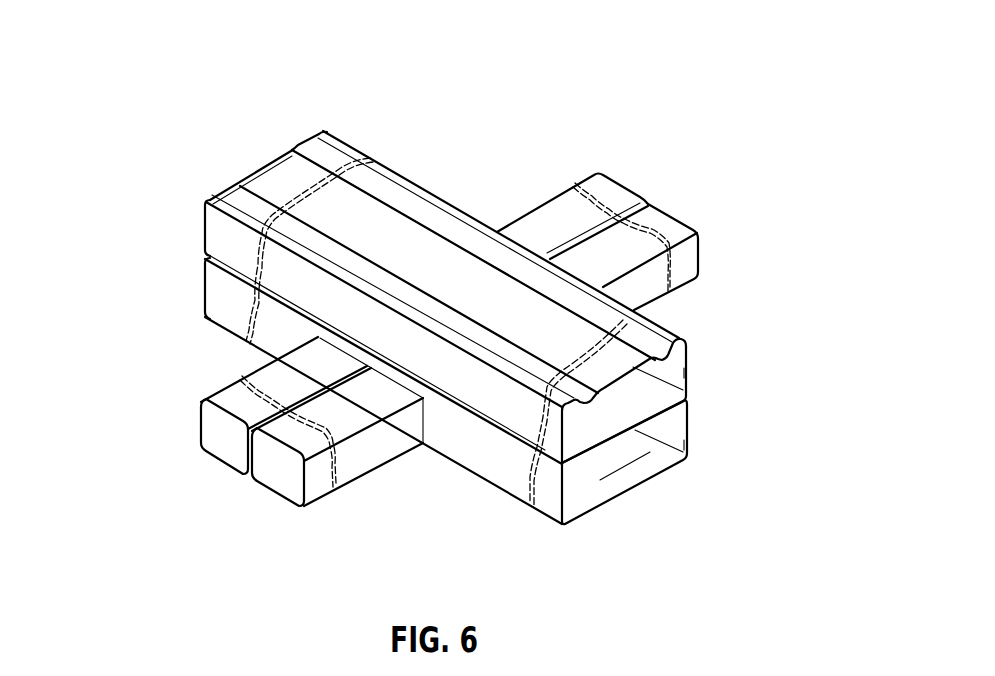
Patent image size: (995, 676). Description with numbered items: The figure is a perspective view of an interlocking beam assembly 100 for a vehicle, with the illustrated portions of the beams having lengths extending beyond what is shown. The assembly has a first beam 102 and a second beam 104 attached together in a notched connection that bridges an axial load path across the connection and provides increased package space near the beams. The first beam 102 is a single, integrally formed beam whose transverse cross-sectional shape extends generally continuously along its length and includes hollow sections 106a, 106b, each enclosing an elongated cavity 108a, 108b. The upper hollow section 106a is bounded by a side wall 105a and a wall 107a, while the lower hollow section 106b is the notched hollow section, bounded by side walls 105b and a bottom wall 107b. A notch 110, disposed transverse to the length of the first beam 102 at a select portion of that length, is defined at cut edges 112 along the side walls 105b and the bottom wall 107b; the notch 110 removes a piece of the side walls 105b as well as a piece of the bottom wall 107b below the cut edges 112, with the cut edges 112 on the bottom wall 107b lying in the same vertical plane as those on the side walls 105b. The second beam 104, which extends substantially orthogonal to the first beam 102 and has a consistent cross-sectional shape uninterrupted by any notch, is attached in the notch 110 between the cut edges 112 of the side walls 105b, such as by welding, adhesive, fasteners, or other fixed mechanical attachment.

The beam assembly 100 is at (450, 306).
The first beam 102 is at (449, 349).
The second beam 104 is at (716, 194).
The side wall 105a is at (690, 350).
The side wall 105b is at (690, 415).
The hollow section 106a is at (217, 233).
The notched hollow section 106b is at (212, 297).
The wall 107a is at (433, 243).
The bottom wall 107b is at (613, 480).
The elongated cavity 108a is at (700, 372).
The elongated cavity 108b is at (700, 444).
The notch 110 is at (416, 446).
The cut edges 112 is at (351, 388).